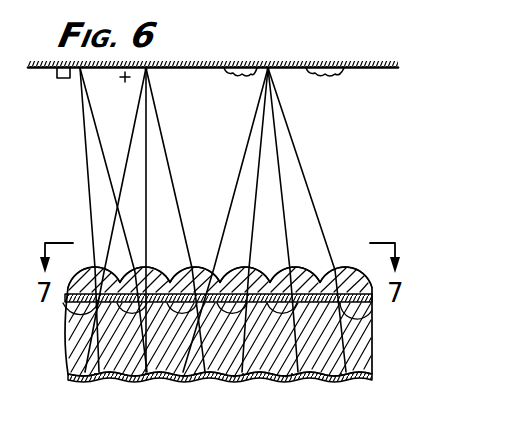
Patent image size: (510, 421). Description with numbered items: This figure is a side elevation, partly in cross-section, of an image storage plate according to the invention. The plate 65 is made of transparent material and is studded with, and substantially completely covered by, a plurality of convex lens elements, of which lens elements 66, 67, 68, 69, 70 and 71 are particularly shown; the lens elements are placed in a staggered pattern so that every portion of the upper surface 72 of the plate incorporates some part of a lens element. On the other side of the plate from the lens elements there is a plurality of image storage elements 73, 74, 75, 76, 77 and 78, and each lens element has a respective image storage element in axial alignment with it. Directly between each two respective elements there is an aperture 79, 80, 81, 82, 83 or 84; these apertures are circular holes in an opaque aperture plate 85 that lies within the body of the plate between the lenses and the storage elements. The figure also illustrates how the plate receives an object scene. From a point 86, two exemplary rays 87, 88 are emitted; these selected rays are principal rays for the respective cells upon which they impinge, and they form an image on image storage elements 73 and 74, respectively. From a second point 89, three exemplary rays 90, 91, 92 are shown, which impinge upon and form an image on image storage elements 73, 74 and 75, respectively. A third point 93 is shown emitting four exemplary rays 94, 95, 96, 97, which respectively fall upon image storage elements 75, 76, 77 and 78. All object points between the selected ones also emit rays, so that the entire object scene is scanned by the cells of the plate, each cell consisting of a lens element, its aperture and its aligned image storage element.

The plate 65 is at (53, 355).
The lens element 66 is at (112, 271).
The lens element 67 is at (161, 271).
The lens element 68 is at (212, 272).
The lens element 69 is at (258, 272).
The lens element 70 is at (304, 271).
The lens element 71 is at (361, 256).
The upper surface 72 is at (86, 258).
The image storage element 73 is at (99, 381).
The image storage element 74 is at (148, 381).
The image storage element 75 is at (191, 381).
The image storage element 76 is at (243, 381).
The image storage element 77 is at (292, 381).
The image storage element 78 is at (340, 381).
The aperture 79 is at (73, 323).
The aperture 80 is at (130, 321).
The aperture 81 is at (178, 316).
The aperture 82 is at (229, 321).
The aperture 83 is at (279, 320).
The aperture 84 is at (373, 321).
The opaque aperture plate 85 is at (56, 307).
The point 86 is at (75, 77).
The ray 87 is at (84, 123).
The ray 88 is at (98, 139).
The point 89 is at (151, 72).
The ray 90 is at (135, 131).
The ray 91 is at (150, 150).
The ray 92 is at (169, 170).
The point 93 is at (274, 74).
The ray 94 is at (254, 119).
The ray 95 is at (263, 134).
The ray 96 is at (280, 139).
The ray 97 is at (296, 160).